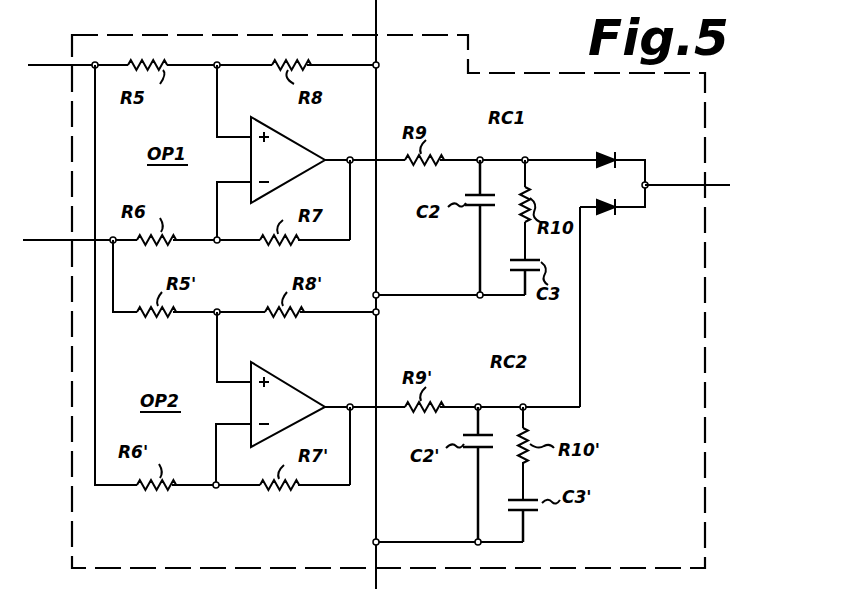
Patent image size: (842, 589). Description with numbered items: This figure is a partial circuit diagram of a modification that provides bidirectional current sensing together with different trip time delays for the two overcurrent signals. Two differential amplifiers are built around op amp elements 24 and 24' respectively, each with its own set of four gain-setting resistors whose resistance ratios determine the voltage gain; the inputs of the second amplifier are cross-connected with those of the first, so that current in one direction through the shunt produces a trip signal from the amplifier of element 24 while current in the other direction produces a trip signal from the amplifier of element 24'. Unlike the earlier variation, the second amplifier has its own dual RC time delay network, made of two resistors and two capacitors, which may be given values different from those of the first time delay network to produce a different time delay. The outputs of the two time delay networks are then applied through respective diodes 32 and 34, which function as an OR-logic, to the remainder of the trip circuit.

The op amp element 24 is at (296, 160).
The op amp element 24' is at (298, 404).
The diode 32 is at (605, 151).
The diode 34 is at (603, 215).